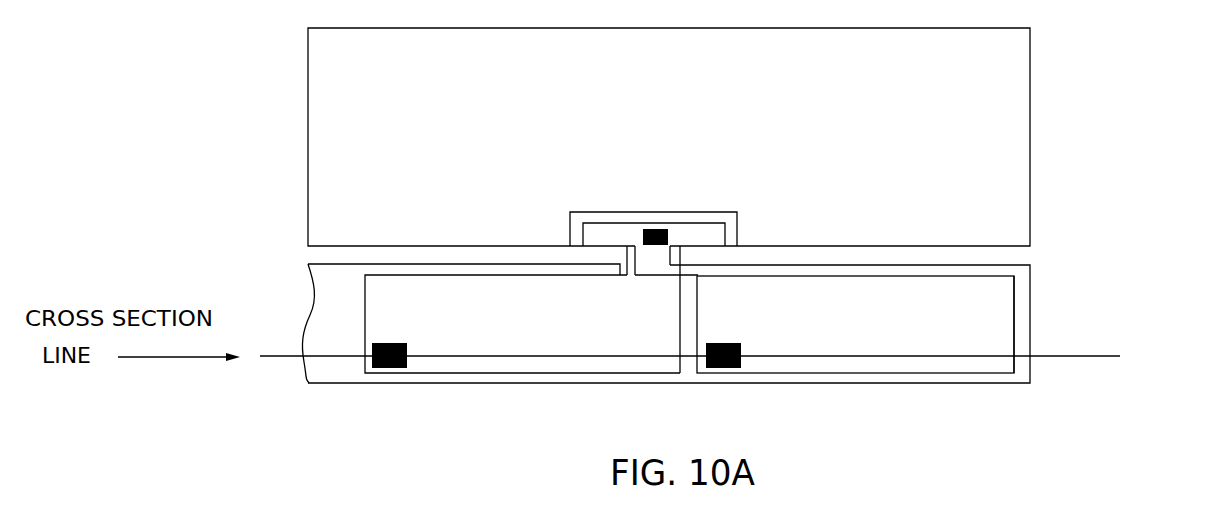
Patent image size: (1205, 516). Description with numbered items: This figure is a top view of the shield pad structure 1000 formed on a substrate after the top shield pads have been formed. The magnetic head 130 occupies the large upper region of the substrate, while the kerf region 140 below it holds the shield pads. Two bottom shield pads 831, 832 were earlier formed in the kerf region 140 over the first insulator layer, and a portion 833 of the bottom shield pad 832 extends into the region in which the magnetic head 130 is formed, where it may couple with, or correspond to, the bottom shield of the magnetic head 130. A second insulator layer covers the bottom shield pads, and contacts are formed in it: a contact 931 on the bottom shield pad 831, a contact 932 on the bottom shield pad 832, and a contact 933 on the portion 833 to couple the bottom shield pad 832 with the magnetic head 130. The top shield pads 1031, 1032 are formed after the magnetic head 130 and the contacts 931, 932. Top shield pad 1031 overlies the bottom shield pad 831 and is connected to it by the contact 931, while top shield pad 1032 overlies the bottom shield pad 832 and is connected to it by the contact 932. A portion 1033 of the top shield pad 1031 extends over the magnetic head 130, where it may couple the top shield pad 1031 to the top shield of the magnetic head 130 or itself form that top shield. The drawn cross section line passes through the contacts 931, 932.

The semiconductor package structure 1000 is at (257, 127).
The magnetic head 130 is at (678, 83).
The kerf region 140 is at (712, 310).
The bottom shield pad 831 is at (328, 299).
The bottom shield pad 832 is at (1015, 329).
The portion of the bottom shield pad 833 is at (604, 230).
The contact 931 is at (383, 368).
The contact 932 is at (730, 368).
The contact 933 is at (667, 230).
The top shield pad 1031 is at (573, 347).
The top shield pad 1032 is at (942, 340).
The portion of the top shield pad 1033 is at (731, 218).